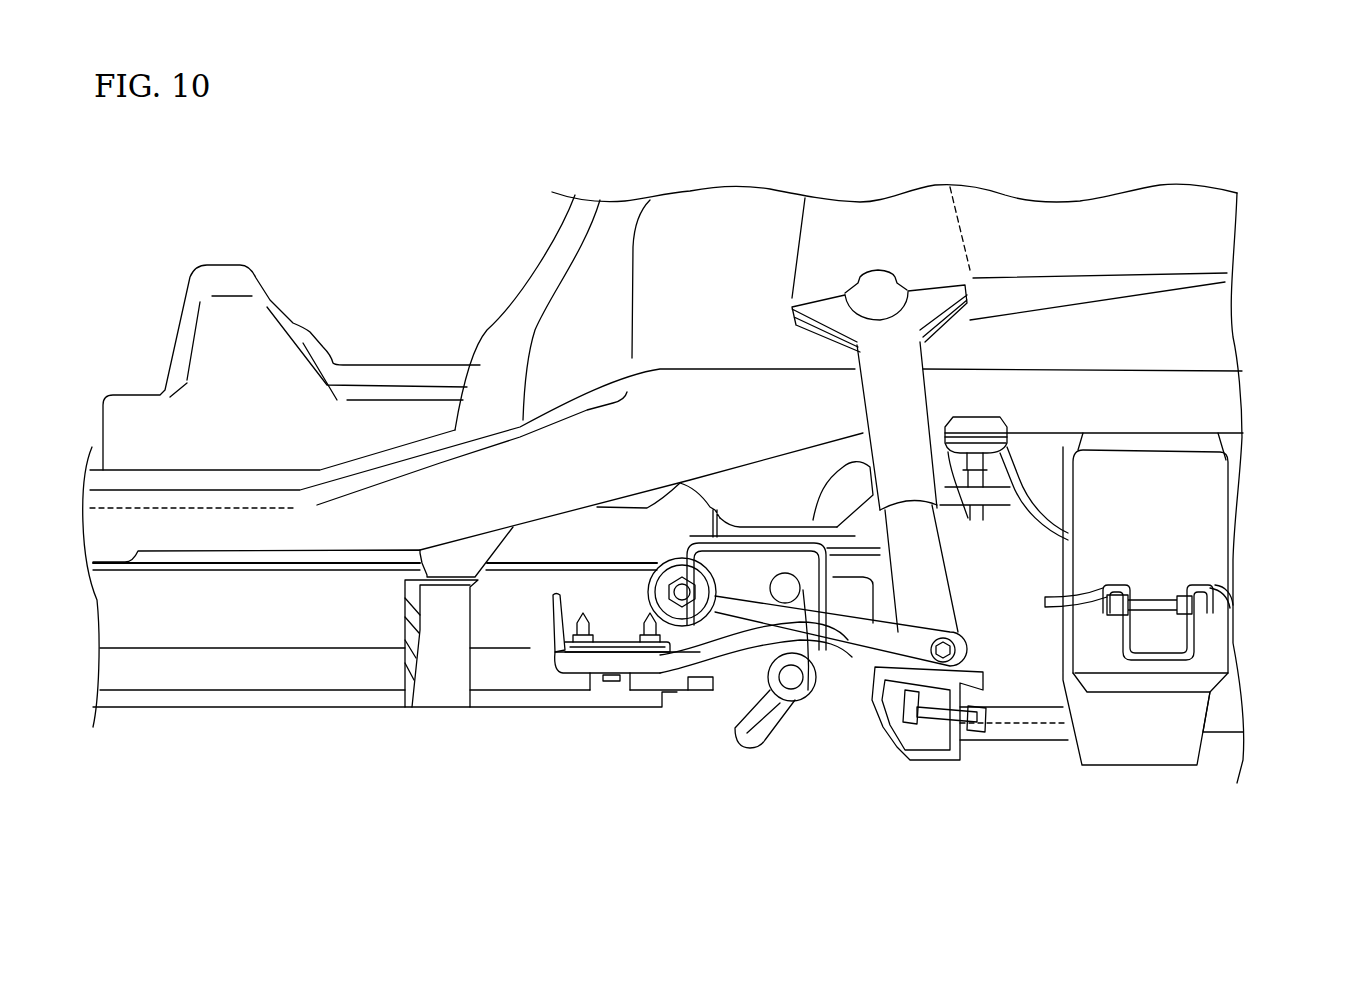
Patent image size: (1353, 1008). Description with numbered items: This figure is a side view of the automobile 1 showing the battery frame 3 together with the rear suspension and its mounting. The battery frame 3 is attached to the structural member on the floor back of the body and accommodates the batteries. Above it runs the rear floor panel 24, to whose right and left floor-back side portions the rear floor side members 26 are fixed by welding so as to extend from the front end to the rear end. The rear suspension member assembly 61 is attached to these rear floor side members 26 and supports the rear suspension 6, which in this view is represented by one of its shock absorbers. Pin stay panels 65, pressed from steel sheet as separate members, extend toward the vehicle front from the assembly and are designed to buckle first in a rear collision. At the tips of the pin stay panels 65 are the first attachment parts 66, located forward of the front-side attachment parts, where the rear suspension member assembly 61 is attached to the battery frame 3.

The automobile 1 is at (1227, 150).
The rear floor panel 24 is at (383, 363).
The rear floor side members 26 is at (1180, 392).
The battery frame 3 is at (313, 697).
The first attachment parts 66 is at (576, 688).
The pin stay panels 65 is at (678, 667).
The rear suspension member assembly 61 is at (808, 690).
The rear suspension 6 is at (947, 578).